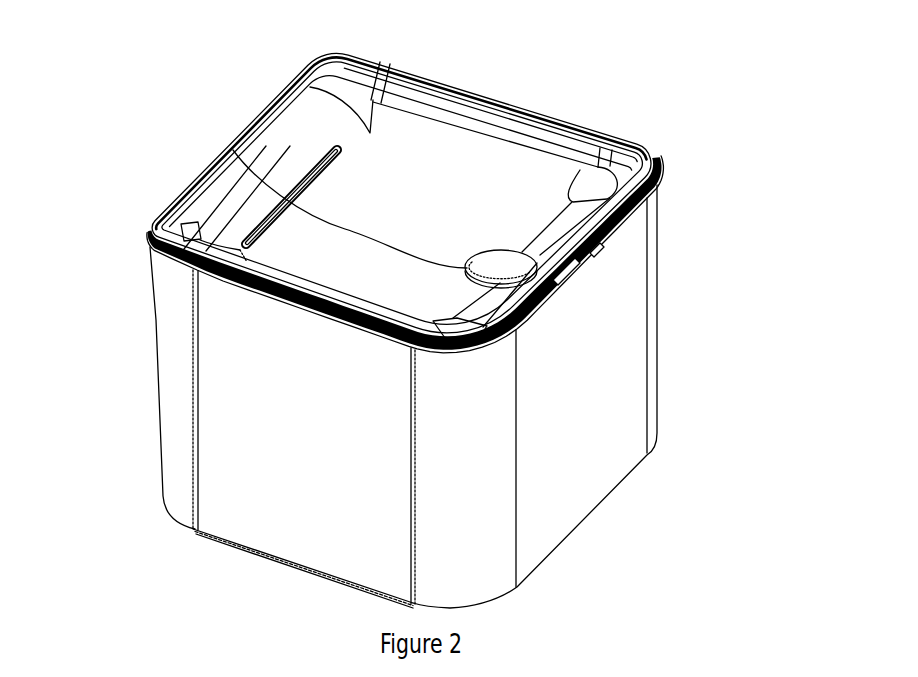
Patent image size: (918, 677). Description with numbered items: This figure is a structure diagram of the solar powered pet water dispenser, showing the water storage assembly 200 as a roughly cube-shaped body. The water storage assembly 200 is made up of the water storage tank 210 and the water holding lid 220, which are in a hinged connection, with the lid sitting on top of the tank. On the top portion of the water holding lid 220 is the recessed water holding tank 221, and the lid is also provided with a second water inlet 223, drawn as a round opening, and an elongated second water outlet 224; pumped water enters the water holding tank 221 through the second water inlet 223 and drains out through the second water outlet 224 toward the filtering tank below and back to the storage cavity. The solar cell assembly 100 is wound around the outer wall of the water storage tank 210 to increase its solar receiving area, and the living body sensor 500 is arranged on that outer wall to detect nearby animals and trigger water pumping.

The solar cell assembly 100 is at (193, 525).
The water storage assembly 200 is at (720, 497).
The water storage tank 210 is at (477, 518).
The water holding lid 220 is at (573, 263).
The water holding tank 221 is at (418, 175).
The second water inlet 223 is at (507, 265).
The second water outlet 224 is at (298, 190).
The living body sensor 500 is at (187, 272).